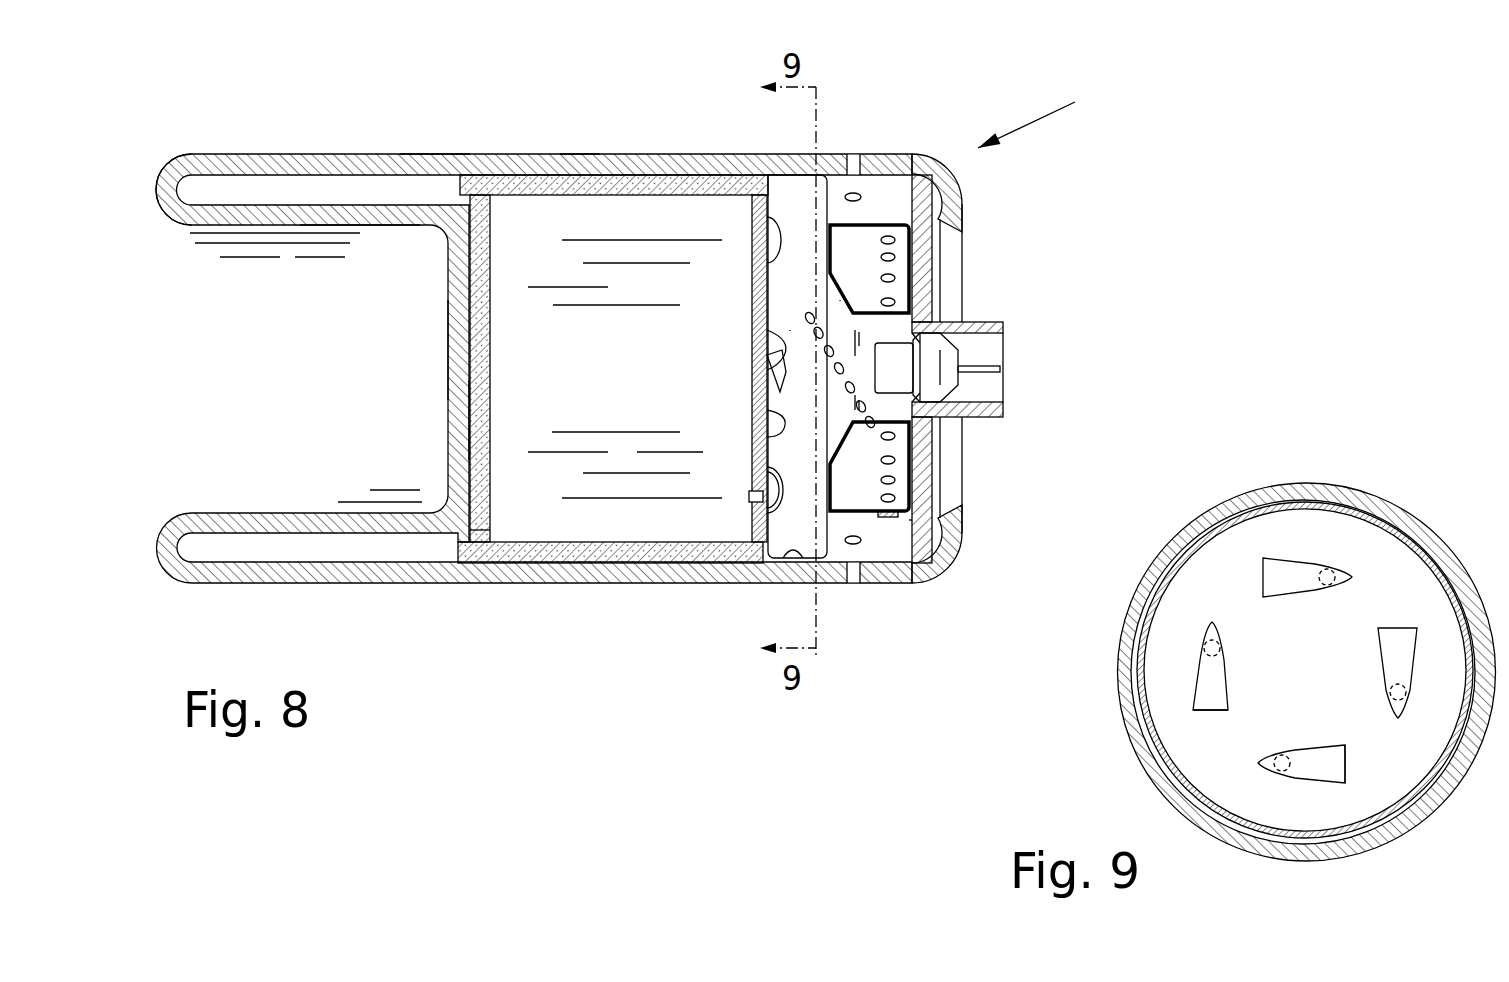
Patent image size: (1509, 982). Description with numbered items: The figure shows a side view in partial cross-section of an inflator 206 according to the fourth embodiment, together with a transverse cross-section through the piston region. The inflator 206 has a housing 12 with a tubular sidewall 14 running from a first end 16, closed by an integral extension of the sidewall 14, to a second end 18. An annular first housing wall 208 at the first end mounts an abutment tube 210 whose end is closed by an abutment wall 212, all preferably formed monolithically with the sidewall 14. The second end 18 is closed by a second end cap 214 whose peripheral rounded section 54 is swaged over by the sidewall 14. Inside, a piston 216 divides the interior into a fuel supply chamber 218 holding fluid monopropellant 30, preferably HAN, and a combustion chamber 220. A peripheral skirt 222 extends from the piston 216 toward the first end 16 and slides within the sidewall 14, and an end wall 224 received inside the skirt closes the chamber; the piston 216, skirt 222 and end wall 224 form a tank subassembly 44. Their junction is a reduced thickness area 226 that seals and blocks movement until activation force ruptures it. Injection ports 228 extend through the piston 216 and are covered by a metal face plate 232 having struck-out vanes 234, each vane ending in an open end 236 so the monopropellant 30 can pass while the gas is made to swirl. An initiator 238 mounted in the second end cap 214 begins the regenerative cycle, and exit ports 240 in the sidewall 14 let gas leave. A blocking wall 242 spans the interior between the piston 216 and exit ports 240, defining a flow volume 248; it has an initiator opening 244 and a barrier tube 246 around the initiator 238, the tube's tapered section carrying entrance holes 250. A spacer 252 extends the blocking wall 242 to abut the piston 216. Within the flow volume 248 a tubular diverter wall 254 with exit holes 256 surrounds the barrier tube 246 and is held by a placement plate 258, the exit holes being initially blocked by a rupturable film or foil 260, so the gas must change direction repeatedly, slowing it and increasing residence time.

In FIG. 8, the housing 12 is at (303, 154).
In FIG. 8, the sidewall 14 is at (430, 154).
In FIG. 9, the sidewall 14 is at (1363, 483).
In FIG. 8, the first end 16 is at (163, 165).
In FIG. 8, the second end 18 is at (963, 204).
In FIG. 8, the fluid monopropellant 30 is at (510, 420).
In FIG. 8, the tank subassembly 44 is at (578, 175).
In FIG. 8, the peripheral rounded section 54 is at (963, 543).
In FIG. 8, the inflator 206 is at (1051, 115).
In FIG. 8, the first housing wall 208 is at (157, 198).
In FIG. 8, the abutment tube 210 is at (403, 226).
In FIG. 8, the abutment wall 212 is at (448, 373).
In FIG. 8, the second end cap 214 is at (934, 253).
In FIG. 8, the piston 216 is at (752, 297).
In FIG. 8, the fuel supply chamber 218 is at (637, 387).
In FIG. 8, the combustion chamber 220 is at (815, 304).
In FIG. 8, the peripheral skirt 222 is at (547, 542).
In FIG. 8, the end wall 224 is at (490, 358).
In FIG. 8, the reduced thickness area 226 is at (485, 542).
In FIG. 8, the injection ports 228 is at (752, 503).
In FIG. 9, the injection ports 228 is at (1220, 648).
In FIG. 8, the face plate 232 is at (786, 422).
In FIG. 9, the face plate 232 is at (1238, 769).
In FIG. 8, the vane 234 is at (767, 240).
In FIG. 9, the vane 234 is at (1403, 665).
In FIG. 8, the open end 236 is at (783, 340).
In FIG. 9, the open end 236 is at (1210, 712).
In FIG. 8, the initiator 238 is at (940, 361).
In FIG. 8, the exit ports 240 is at (861, 195).
In FIG. 8, the blocking wall 242 is at (827, 213).
In FIG. 8, the initiator opening 244 is at (852, 465).
In FIG. 8, the barrier tube 246 is at (893, 312).
In FIG. 8, the flow volume 248 is at (906, 536).
In FIG. 8, the entrance holes 250 is at (845, 392).
In FIG. 8, the spacer 252 is at (787, 556).
In FIG. 9, the spacer 252 is at (1387, 527).
In FIG. 8, the diverter wall 254 is at (867, 513).
In FIG. 8, the exit holes 256 is at (895, 481).
In FIG. 8, the placement plate 258 is at (897, 264).
In FIG. 8, the rupturable film or foil 260 is at (887, 517).